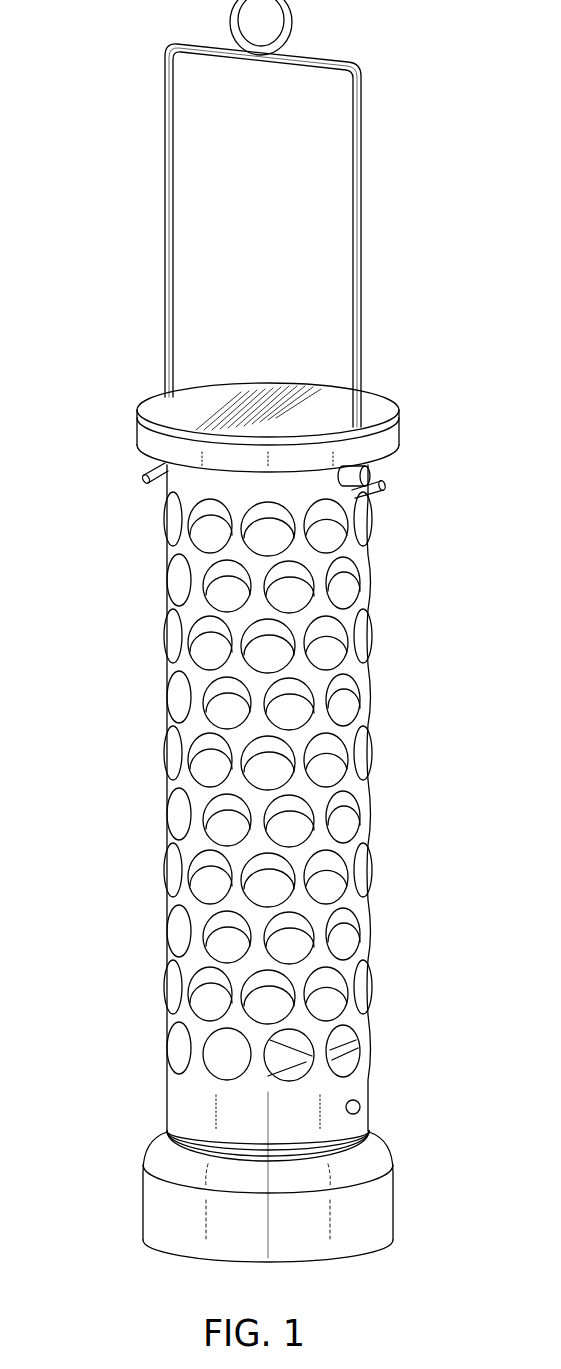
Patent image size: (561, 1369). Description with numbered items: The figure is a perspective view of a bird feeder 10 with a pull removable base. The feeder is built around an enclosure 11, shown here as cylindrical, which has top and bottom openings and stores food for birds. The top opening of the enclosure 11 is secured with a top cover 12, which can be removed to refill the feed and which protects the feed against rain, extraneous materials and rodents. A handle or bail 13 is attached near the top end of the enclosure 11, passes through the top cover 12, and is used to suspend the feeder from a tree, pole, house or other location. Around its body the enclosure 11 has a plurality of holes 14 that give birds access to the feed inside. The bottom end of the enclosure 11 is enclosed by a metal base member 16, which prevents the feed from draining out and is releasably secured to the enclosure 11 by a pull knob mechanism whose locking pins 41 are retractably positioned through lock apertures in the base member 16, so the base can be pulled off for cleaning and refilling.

The bird feeder 10 is at (122, 99).
The enclosure 11 is at (345, 851).
The top cover 12 is at (399, 413).
The handle or bail 13 is at (362, 132).
The holes 14 is at (366, 703).
The base member 16 is at (402, 1240).
The locking pins 41 is at (361, 1105).